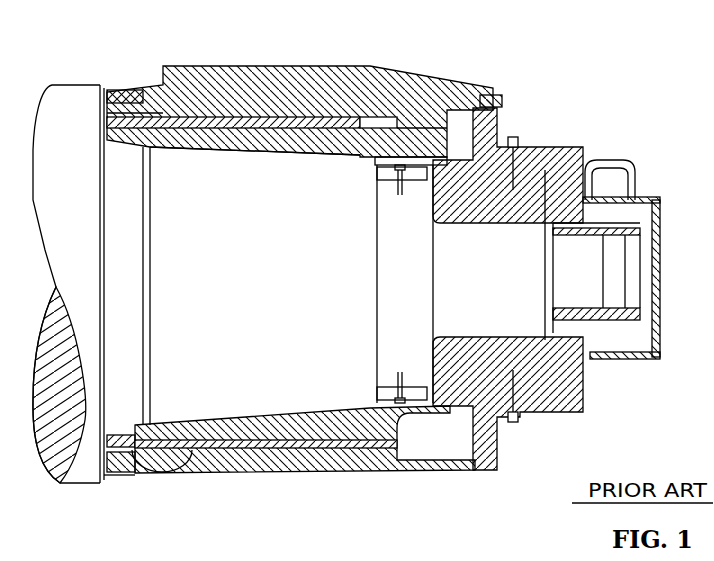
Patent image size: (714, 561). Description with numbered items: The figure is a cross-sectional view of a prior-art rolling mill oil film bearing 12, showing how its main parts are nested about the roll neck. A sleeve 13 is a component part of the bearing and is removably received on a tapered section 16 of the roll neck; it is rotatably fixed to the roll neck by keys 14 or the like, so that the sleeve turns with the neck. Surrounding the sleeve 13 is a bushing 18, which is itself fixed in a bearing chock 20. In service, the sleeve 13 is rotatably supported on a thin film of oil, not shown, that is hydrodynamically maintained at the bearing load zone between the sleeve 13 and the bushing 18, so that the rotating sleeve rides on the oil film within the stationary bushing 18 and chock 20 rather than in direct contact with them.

The rolling mill oil film bearing 12 is at (550, 68).
The sleeve 13 is at (285, 148).
The keys 14 is at (377, 175).
The tapered section 16 is at (286, 295).
The bushing 18 is at (165, 472).
The bearing chock 20 is at (343, 70).